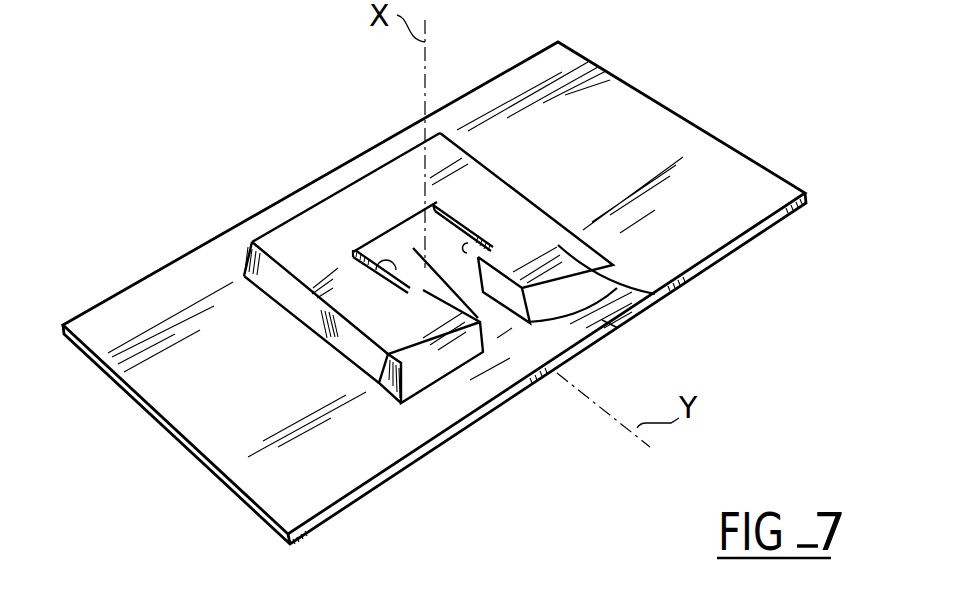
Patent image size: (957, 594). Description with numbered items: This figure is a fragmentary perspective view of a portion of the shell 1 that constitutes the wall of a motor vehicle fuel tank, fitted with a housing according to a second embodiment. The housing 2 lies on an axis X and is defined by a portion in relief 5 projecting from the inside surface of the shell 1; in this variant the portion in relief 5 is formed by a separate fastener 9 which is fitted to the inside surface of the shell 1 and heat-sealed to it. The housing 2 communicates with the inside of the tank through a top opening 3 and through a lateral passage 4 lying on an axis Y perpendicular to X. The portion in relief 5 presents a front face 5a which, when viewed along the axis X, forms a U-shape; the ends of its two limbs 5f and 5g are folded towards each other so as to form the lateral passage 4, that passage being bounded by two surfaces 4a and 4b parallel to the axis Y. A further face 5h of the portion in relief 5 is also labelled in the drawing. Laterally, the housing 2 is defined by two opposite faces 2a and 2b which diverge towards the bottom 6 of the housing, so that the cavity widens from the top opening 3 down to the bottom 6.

The shell 1 is at (149, 312).
The housing 2 is at (410, 262).
The face of housing 2a is at (345, 268).
The face of housing 2b is at (478, 257).
The top opening 3 is at (424, 289).
The lateral passage 4 is at (482, 293).
The surface of lateral passage 4a is at (475, 327).
The surface of lateral passage 4b is at (618, 328).
The portion in relief 5 is at (304, 245).
The front face 5a is at (353, 237).
The limb 5f is at (385, 313).
The limb 5g is at (490, 207).
The rear top face of block 5h is at (414, 202).
The bottom of housing 6 is at (456, 277).
The fastener 9 is at (643, 308).